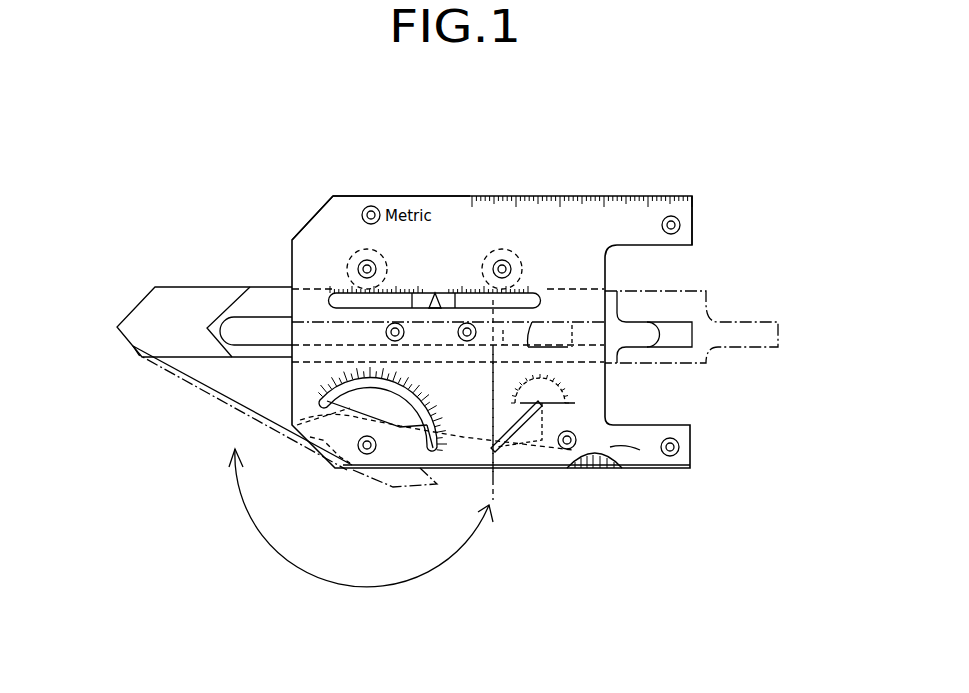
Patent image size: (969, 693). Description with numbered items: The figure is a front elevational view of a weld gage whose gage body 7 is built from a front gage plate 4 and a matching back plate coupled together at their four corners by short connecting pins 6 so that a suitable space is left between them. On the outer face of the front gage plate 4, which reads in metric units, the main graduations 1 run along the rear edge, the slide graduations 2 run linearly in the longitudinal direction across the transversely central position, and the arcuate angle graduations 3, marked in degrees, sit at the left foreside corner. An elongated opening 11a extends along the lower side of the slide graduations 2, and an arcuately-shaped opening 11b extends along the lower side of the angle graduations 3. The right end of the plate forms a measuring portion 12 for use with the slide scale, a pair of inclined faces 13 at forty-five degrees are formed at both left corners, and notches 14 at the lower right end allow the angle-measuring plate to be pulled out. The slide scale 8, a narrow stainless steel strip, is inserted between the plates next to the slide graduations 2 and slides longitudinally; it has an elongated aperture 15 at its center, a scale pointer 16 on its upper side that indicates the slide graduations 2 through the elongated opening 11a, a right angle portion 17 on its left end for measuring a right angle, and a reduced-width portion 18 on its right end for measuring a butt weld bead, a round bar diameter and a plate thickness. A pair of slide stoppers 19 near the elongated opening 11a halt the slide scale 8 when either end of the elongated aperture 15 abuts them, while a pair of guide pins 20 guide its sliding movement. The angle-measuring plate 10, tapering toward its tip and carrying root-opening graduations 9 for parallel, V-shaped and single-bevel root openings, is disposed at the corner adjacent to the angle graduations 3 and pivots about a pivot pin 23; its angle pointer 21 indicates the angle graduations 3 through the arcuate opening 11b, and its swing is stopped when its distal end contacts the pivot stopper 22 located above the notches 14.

The main graduations 1 is at (657, 203).
The slide graduations 2 is at (438, 290).
The angle graduations 3 is at (313, 398).
The front gage plate 4 is at (354, 205).
The connecting pins 6 is at (680, 225).
The gage body 7 is at (680, 203).
The slide scale 8 is at (268, 288).
The root-opening graduations 9 is at (597, 470).
The angle-measuring plate 10 is at (162, 381).
The elongated opening 11a is at (545, 292).
The arcuately-shaped opening 11b is at (427, 432).
The measuring portion 12 is at (610, 378).
The inclined faces 13 is at (317, 214).
The notches 14 is at (610, 447).
The elongated aperture 15 is at (493, 480).
The scale pointer 16 is at (432, 290).
The right angle portion 17 is at (187, 287).
The reduced-width portion 18 is at (680, 335).
The slide stoppers 19 is at (467, 341).
The guide pins 20 is at (508, 262).
The angle pointer 21 is at (307, 445).
The pivot stopper 22 is at (578, 437).
The pivot pin 23 is at (365, 452).